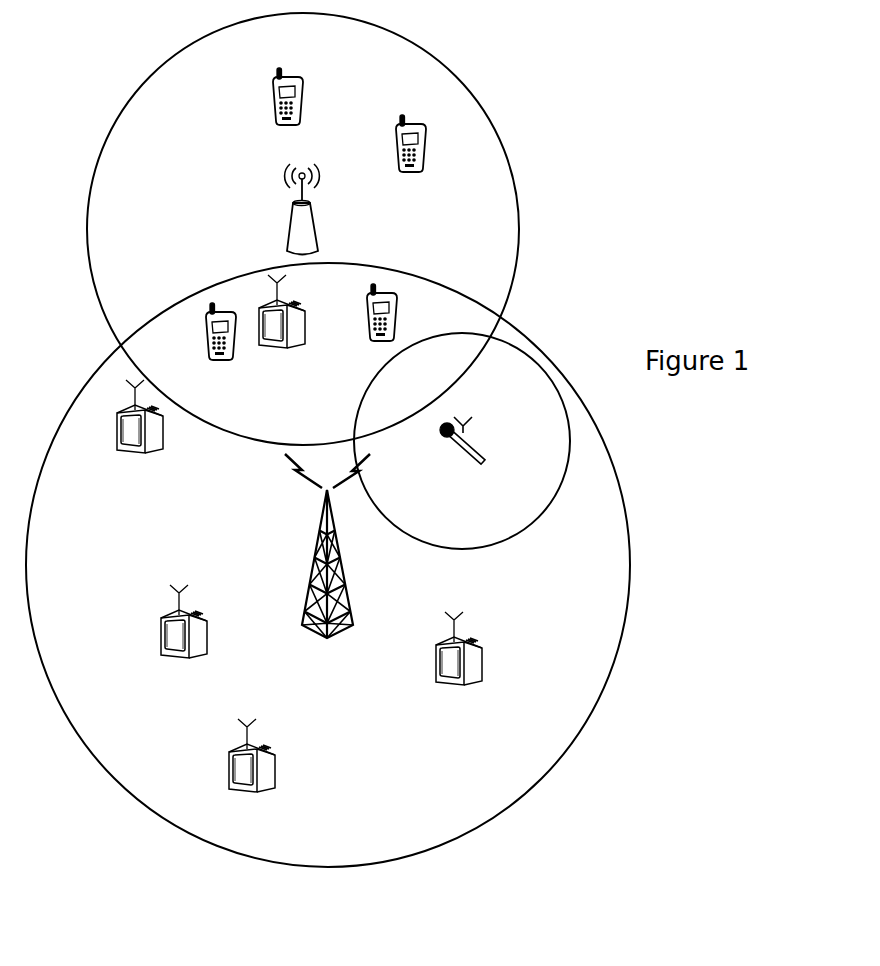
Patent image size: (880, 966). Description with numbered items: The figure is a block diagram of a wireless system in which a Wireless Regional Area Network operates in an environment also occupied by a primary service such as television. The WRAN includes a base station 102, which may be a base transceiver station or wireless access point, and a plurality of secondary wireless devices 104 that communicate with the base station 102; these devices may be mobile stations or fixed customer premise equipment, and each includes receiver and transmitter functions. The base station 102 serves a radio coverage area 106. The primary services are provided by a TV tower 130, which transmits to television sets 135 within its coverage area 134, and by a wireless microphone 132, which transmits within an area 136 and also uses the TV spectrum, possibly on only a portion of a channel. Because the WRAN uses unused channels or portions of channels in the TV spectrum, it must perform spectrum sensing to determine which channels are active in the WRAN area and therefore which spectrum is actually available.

The base station 102 is at (294, 215).
The secondary wireless devices 104 is at (292, 126).
The radio coverage area 106 is at (518, 282).
The TV tower 130 is at (325, 566).
The wireless microphone 132 is at (468, 460).
The coverage area 134 is at (616, 662).
The television sets 135 is at (283, 347).
The area 136 is at (462, 550).